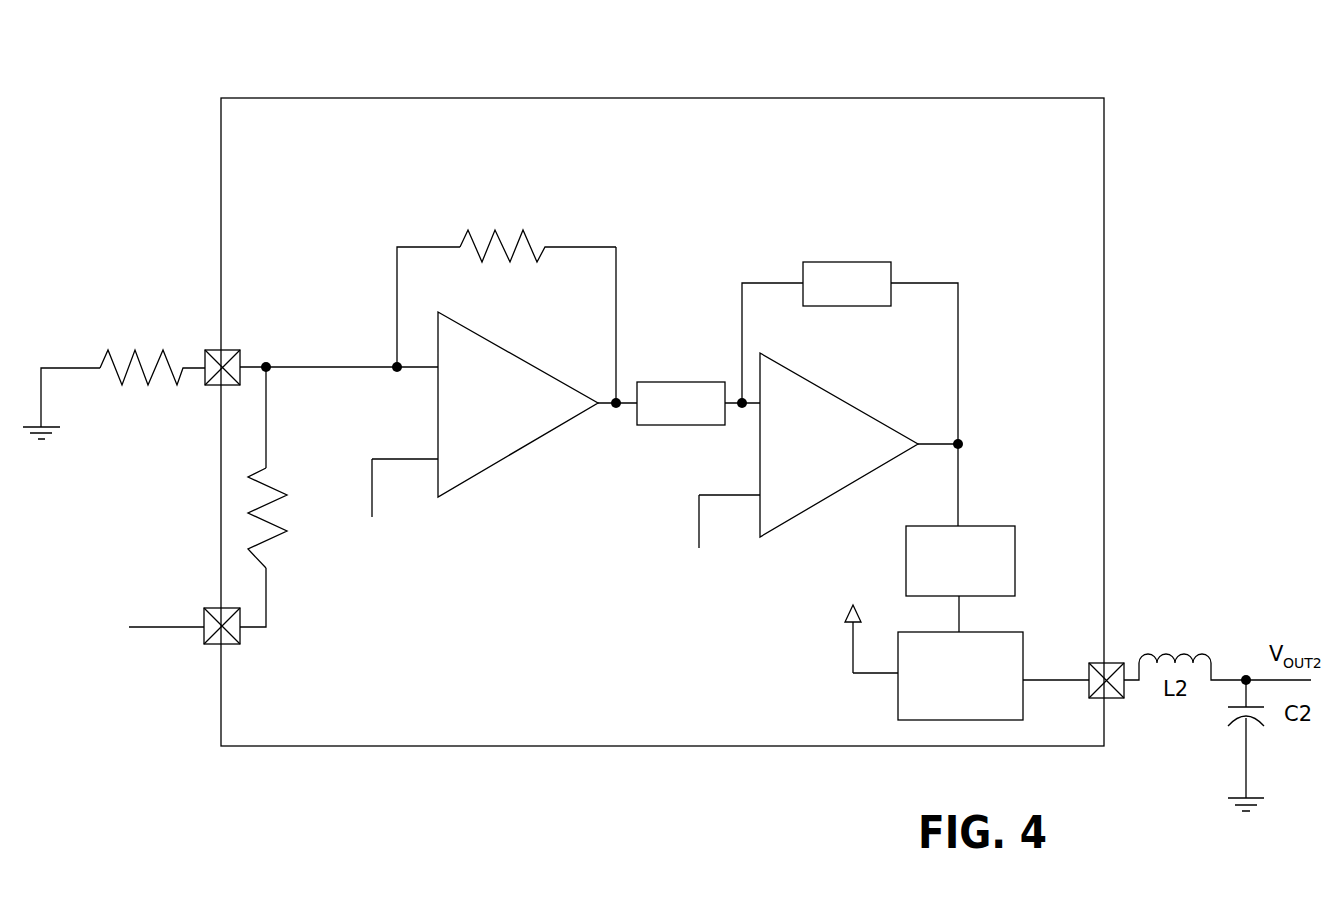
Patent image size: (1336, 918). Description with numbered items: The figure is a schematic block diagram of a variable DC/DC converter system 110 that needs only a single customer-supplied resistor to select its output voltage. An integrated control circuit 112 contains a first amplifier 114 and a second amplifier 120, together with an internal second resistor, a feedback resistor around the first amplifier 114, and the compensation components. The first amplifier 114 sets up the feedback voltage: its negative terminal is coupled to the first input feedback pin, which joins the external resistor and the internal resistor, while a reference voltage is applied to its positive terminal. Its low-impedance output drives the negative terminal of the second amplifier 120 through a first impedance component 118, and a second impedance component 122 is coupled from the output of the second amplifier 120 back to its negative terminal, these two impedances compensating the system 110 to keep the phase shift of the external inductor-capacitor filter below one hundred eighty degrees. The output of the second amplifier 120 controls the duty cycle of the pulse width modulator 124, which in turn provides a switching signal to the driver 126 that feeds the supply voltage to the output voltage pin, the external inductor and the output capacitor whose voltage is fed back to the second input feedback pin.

The variable DC/DC converter system 110 is at (1089, 54).
The integrated control circuit 112 is at (730, 97).
The first amplifier 114 is at (493, 343).
The first impedance component 118 is at (665, 382).
The second amplifier 120 is at (805, 379).
The second impedance component 122 is at (840, 262).
The pulse width modulator 124 is at (972, 526).
The driver 126 is at (975, 632).